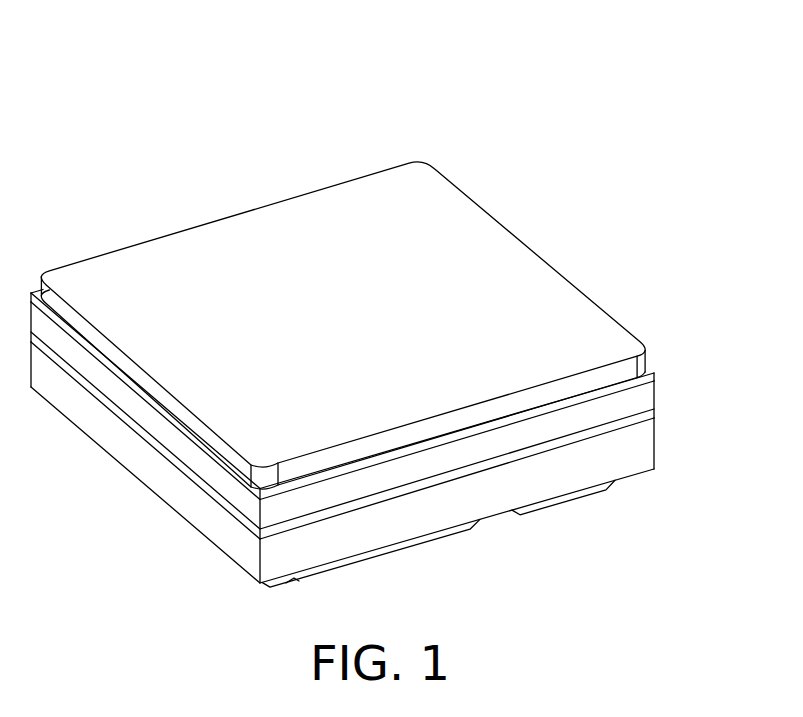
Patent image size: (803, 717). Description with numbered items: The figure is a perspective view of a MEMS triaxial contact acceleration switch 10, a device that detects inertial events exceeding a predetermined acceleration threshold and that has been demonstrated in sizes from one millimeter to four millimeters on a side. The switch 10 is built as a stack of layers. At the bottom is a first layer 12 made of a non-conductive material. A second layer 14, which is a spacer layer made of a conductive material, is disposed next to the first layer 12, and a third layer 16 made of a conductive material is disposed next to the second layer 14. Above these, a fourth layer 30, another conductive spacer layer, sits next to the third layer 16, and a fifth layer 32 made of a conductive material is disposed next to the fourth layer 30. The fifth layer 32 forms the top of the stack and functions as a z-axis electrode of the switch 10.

The MEMS triaxial contact acceleration switch 10 is at (93, 121).
The first layer 12 is at (636, 463).
The second layer 14 is at (652, 418).
The third layer 16 is at (652, 397).
The fourth layer 30 is at (649, 375).
The fifth layer 32 is at (283, 226).